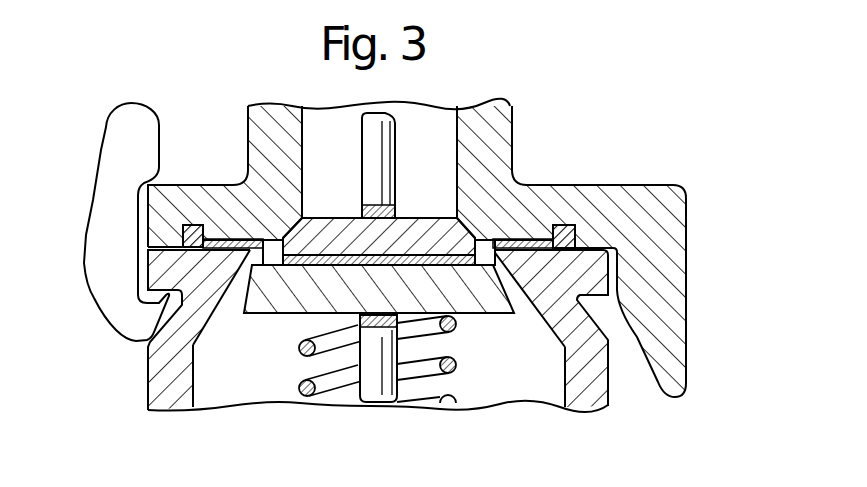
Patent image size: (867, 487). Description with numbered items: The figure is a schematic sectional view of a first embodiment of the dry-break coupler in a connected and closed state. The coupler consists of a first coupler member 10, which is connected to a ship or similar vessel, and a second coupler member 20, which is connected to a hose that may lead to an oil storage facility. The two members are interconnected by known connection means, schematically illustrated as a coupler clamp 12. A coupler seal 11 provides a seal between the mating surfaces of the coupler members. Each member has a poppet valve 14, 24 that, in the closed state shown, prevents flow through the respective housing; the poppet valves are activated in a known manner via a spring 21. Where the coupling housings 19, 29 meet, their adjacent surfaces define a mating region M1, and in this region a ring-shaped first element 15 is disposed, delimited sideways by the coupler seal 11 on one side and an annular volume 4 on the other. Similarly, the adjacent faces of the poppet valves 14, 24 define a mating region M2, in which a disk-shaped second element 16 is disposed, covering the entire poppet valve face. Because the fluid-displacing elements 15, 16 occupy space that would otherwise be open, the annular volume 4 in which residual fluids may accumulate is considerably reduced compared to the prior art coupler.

The annular volume 4 is at (270, 251).
The first coupler member 10 is at (512, 133).
The coupler seal 11 is at (562, 226).
The coupler clamp 12 is at (91, 193).
The poppet valve 14 is at (420, 233).
The first element 15 is at (230, 238).
The second element 16 is at (333, 262).
The coupling housing 19 is at (183, 193).
The second coupler member 20 is at (611, 392).
The spring 21 is at (418, 370).
The poppet valve 24 is at (500, 303).
The coupling housing 29 is at (170, 375).
The mating region M1 is at (262, 252).
The mating region M2 is at (462, 262).